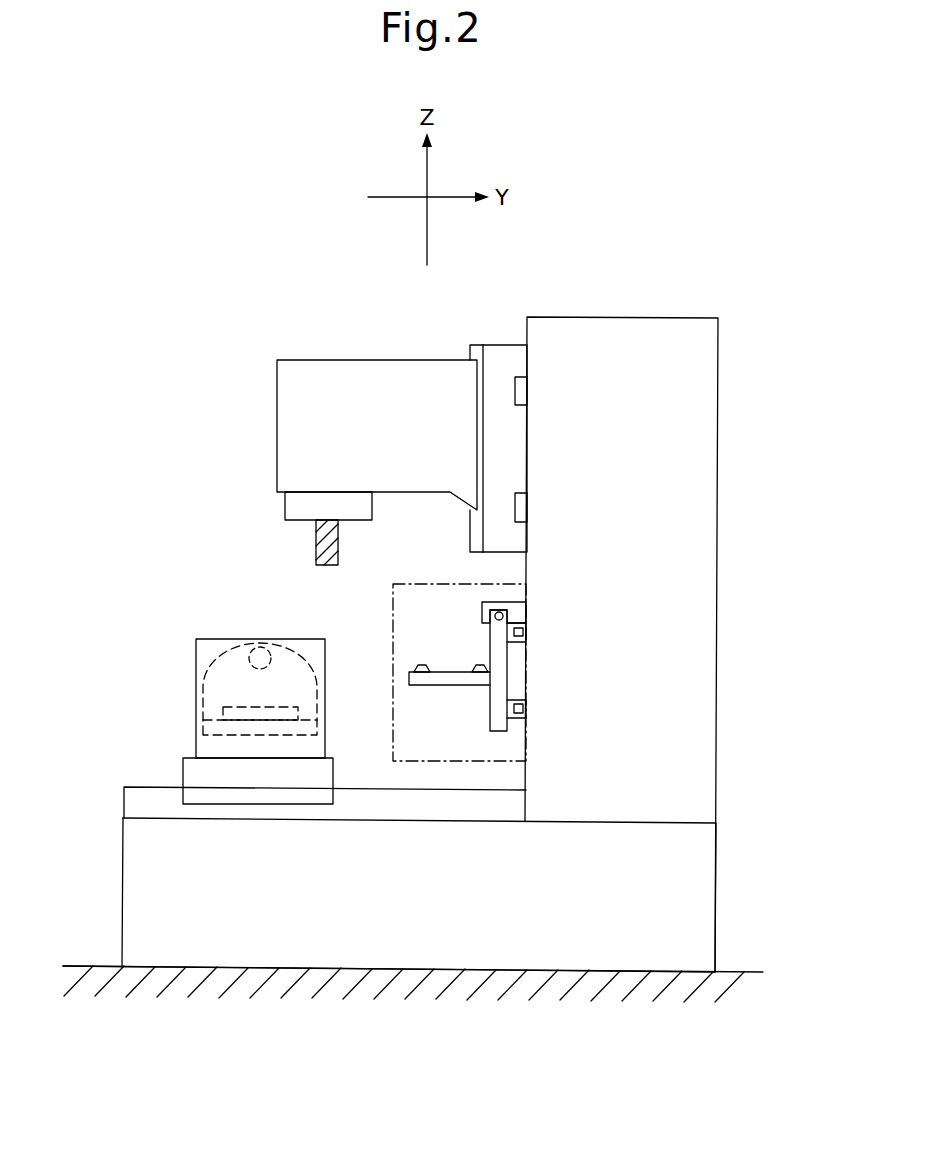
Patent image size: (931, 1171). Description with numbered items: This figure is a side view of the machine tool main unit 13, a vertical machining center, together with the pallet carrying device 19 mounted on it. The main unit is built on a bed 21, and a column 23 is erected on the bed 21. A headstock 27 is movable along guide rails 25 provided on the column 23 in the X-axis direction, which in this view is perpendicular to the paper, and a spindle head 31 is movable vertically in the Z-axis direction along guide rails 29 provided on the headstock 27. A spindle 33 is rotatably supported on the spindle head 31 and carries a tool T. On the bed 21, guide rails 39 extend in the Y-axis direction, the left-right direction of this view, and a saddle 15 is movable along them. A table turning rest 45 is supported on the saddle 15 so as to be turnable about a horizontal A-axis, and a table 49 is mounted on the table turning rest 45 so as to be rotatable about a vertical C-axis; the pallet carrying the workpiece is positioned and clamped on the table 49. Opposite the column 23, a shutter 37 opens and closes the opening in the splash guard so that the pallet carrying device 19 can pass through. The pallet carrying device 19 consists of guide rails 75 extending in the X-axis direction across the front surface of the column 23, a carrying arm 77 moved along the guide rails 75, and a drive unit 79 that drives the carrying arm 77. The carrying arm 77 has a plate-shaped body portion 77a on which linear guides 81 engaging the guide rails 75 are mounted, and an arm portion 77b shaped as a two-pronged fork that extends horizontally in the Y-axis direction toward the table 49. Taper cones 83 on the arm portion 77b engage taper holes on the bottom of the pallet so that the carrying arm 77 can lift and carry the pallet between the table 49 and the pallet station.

The machine tool main unit 13 is at (569, 258).
The saddle 15 is at (197, 775).
The pallet carrying device 19 is at (410, 644).
The bed 21 is at (700, 888).
The column 23 is at (692, 440).
The guide rails 25 is at (522, 380).
The headstock 27 is at (497, 358).
The guide rails 29 is at (472, 538).
The spindle head 31 is at (357, 375).
The spindle 33 is at (295, 506).
The tool T is at (316, 546).
The shutter 37 is at (393, 600).
The guide rails 39 is at (137, 802).
The table turning rest 45 is at (205, 723).
The table 49 is at (242, 703).
The guide rails 75 is at (523, 633).
The carrying arm 77 is at (427, 700).
The body portion 77a is at (500, 724).
The arm portion 77b is at (409, 675).
The drive unit 79 is at (499, 611).
The linear guides 81 is at (523, 630).
The taper cones 83 is at (410, 668).